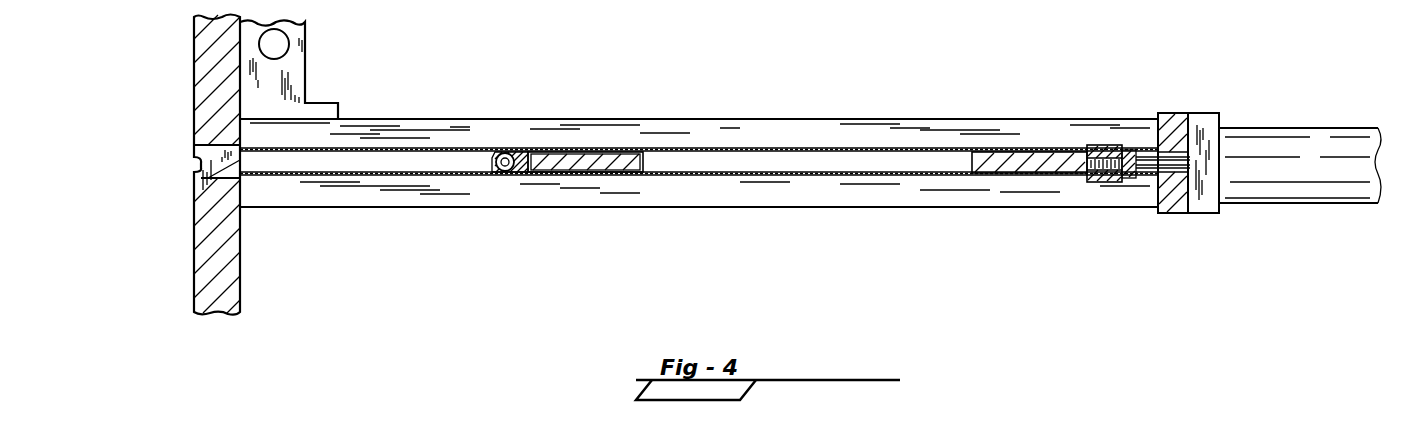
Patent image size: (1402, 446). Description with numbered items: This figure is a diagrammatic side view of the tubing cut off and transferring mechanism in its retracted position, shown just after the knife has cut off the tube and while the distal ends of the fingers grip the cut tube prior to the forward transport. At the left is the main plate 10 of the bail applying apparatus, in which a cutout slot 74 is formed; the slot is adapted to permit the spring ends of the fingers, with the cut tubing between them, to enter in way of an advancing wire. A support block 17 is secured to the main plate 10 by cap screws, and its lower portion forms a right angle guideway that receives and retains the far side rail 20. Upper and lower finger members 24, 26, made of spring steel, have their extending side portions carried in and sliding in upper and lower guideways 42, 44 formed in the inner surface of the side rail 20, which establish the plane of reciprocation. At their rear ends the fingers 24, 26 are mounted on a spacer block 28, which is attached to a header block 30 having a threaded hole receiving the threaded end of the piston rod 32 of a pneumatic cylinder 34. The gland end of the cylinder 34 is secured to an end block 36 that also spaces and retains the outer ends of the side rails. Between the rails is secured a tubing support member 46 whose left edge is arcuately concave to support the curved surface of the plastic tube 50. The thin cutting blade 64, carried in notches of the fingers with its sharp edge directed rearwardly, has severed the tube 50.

The main plate 10 is at (215, 48).
The left-hand support block 17 is at (297, 70).
The far side rail 20 is at (366, 128).
The upper finger member 24 is at (770, 149).
The lower finger member 26 is at (790, 177).
The spacer block 28 is at (1012, 176).
The header block 30 is at (1100, 146).
The piston rod 32 is at (1150, 170).
The pneumatic cylinder 34 is at (1250, 196).
The end block 36 is at (1207, 124).
The upper guideway 42 is at (440, 148).
The lower guideway 44 is at (437, 177).
The tubing support member 46 is at (612, 172).
The plastic tube 50 is at (493, 172).
The cutting blade 64 is at (589, 150).
The cutout slot 74 is at (210, 178).